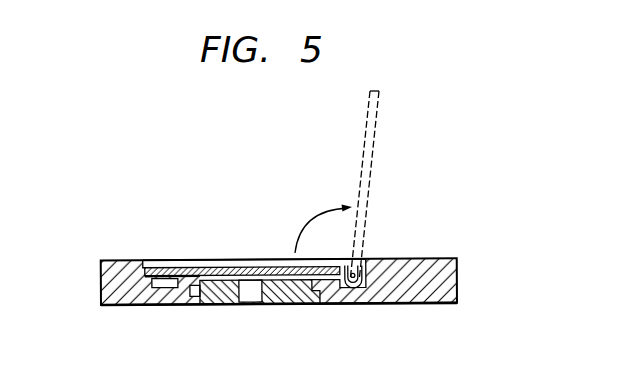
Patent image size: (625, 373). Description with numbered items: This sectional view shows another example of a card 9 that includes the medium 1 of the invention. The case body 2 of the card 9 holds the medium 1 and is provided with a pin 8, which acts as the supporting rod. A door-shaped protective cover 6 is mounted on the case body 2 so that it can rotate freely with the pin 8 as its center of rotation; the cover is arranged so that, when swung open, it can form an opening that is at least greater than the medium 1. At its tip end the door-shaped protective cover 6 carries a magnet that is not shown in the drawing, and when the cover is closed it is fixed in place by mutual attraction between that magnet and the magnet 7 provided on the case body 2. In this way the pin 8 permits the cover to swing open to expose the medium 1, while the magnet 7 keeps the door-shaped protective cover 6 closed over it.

The medium 1 is at (217, 305).
The case body 2 is at (457, 285).
The door-shaped protective cover 6 is at (195, 268).
The magnet 7 is at (162, 288).
The pin 8 is at (362, 263).
The card 9 is at (142, 248).